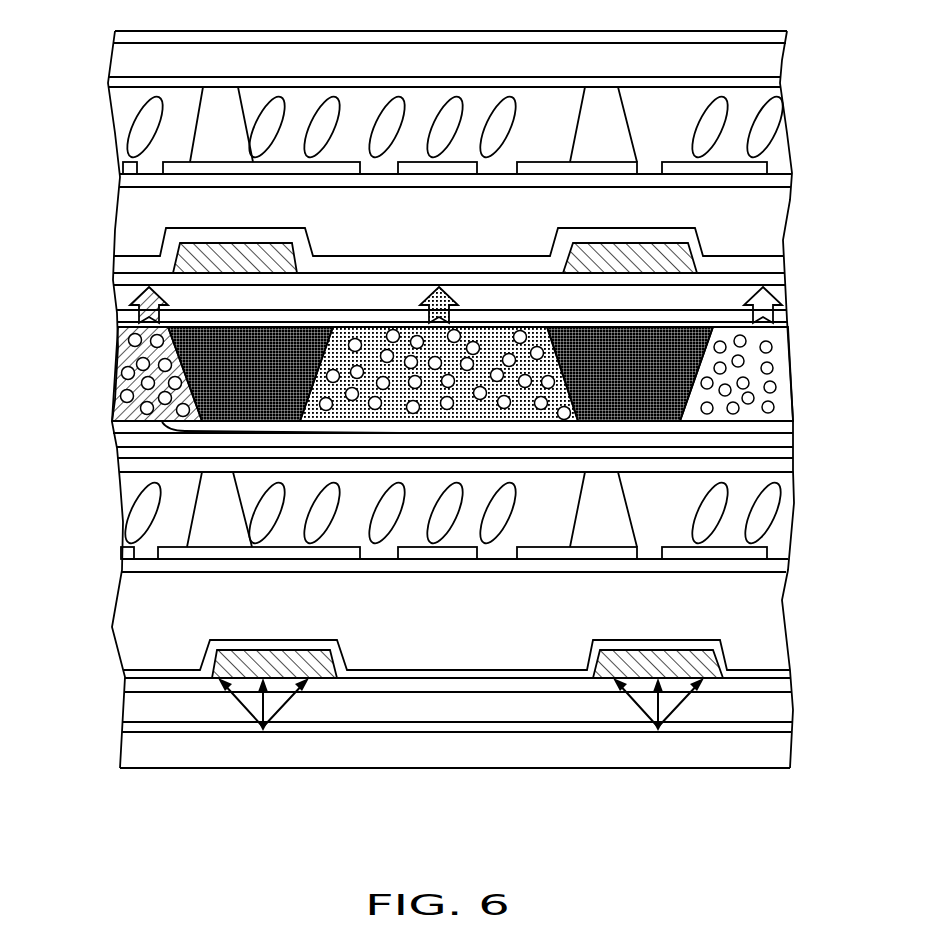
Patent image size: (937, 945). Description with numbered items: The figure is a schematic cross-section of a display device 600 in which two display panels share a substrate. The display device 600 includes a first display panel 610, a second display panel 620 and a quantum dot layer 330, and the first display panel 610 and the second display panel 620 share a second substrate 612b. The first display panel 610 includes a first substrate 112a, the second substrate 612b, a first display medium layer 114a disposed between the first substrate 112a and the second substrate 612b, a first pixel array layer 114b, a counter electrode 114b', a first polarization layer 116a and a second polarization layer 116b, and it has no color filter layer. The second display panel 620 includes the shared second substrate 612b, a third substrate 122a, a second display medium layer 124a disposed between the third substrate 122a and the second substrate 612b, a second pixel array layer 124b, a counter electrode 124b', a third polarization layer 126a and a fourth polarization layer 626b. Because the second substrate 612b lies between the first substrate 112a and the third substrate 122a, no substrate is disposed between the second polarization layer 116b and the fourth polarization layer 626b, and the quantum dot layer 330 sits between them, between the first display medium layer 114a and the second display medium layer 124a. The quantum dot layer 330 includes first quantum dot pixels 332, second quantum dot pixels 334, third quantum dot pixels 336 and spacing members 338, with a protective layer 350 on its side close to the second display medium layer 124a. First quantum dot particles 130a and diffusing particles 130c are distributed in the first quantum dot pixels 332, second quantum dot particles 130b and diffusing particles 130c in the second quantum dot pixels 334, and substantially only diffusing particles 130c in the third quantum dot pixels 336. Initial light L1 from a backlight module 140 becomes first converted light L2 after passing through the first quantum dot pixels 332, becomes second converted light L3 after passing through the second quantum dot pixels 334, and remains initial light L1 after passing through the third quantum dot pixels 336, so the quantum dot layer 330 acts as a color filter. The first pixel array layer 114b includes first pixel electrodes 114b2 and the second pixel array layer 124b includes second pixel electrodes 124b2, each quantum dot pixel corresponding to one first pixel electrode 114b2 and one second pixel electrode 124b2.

The display device 600 is at (877, 847).
The first display panel 610 is at (476, 190).
The second display panel 620 is at (431, 546).
The first polarization layer 116a is at (787, 33).
The first substrate 112a is at (770, 67).
The counter electrode 114b' is at (481, 93).
The first display medium layer 114a is at (768, 128).
The first pixel array layer 114b is at (450, 222).
The first pixel electrodes 114b2 is at (433, 174).
The second substrate 612b is at (126, 305).
The second polarization layer 116b is at (486, 348).
The initial light L1 is at (780, 310).
The first converted light L2 is at (133, 300).
The second converted light L3 is at (423, 302).
The first quantum dot particles 130a is at (120, 362).
The second quantum dot particles 130b is at (307, 405).
The diffusing particles 130c is at (767, 368).
The quantum dot layer 330 is at (857, 382).
The first quantum dot pixels 332 is at (680, 408).
The second quantum dot pixels 334 is at (573, 397).
The third quantum dot pixels 336 is at (767, 398).
The spacing members 338 is at (690, 352).
The protective layer 350 is at (116, 432).
The fourth polarization layer 626b is at (118, 447).
The counter electrode 124b' is at (424, 478).
The second display medium layer 124a is at (765, 512).
The second pixel array layer 124b is at (423, 592).
The second pixel electrodes 124b2 is at (411, 531).
The third substrate 122a is at (135, 708).
The third polarization layer 126a is at (132, 728).
The backlight module 140 is at (782, 752).